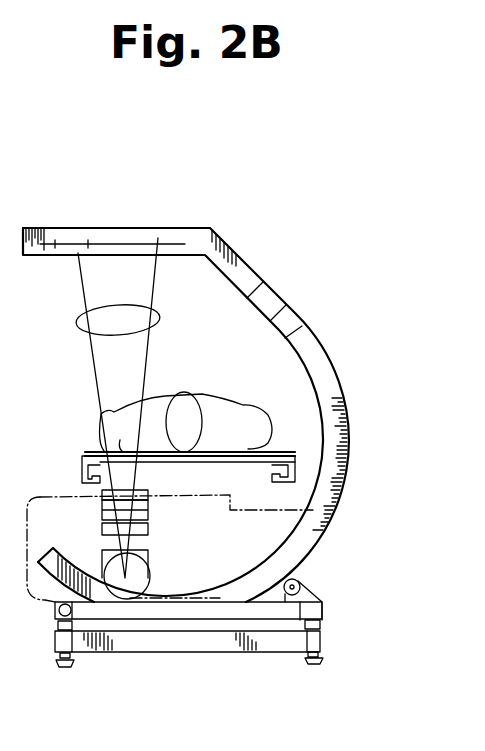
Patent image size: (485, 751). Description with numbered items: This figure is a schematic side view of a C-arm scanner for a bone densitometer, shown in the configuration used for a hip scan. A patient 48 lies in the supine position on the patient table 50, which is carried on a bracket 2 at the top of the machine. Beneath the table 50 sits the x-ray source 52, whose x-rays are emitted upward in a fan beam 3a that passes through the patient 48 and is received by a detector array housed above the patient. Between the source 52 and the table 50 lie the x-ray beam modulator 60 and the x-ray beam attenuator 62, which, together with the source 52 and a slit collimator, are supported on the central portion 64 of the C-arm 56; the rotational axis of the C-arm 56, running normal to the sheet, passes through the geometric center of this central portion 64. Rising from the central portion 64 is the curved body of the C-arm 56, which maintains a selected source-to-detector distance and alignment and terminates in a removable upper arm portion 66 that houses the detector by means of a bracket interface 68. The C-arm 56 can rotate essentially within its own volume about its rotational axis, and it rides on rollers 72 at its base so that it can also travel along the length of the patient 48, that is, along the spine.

The patient table 2 is at (285, 450).
The scan field / beam cross-section 3a is at (158, 324).
The patient 48 is at (237, 403).
The patient table 50 is at (80, 472).
The x-ray source 52 is at (148, 577).
The C-arm 56 is at (313, 540).
The x-ray beam modulator 60 is at (148, 513).
The x-ray beam attenuator 62 is at (148, 490).
The central portion 64 is at (336, 512).
The removable upper arm portion 66 is at (135, 227).
The bracket interface 68 is at (273, 298).
The rollers 72 is at (304, 580).